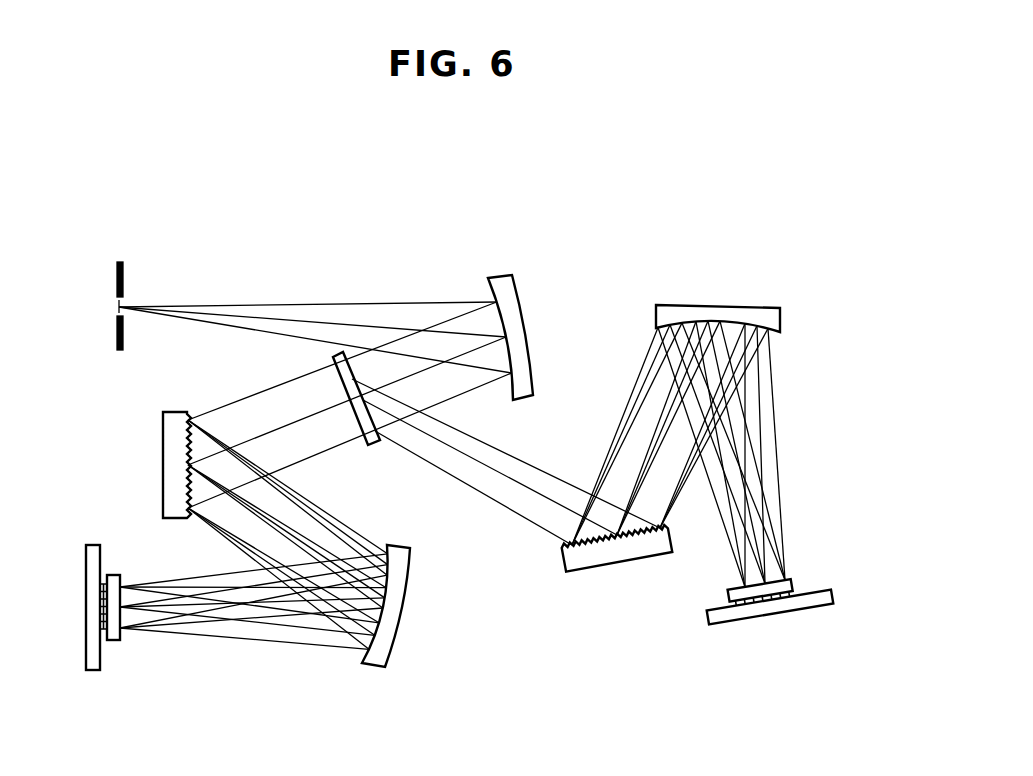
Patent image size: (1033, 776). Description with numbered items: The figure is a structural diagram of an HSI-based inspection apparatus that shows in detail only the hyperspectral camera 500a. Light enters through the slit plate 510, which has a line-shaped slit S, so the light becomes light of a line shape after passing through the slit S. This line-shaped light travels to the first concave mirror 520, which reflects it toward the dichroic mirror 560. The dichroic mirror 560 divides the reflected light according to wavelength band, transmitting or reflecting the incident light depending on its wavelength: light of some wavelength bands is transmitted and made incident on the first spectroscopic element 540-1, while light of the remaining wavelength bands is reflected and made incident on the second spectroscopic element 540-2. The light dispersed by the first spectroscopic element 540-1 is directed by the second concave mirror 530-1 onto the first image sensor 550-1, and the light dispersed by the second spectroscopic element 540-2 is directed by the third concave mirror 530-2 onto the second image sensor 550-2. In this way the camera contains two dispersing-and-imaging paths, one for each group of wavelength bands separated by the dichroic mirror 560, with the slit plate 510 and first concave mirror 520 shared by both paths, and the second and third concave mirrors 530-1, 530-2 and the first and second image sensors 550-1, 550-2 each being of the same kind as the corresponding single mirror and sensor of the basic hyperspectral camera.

The hyperspectral camera 500a is at (733, 219).
The slit plate 510 is at (119, 262).
The slit S is at (130, 297).
The first concave mirror 520 is at (497, 277).
The dichroic mirror 560 is at (370, 444).
The first spectroscopic element 540-1 is at (163, 465).
The second concave mirror 530-1 is at (398, 608).
The first image sensor 550-1 is at (93, 670).
The second spectroscopic element 540-2 is at (618, 563).
The third concave mirror 530-2 is at (717, 305).
The second image sensor 550-2 is at (772, 617).